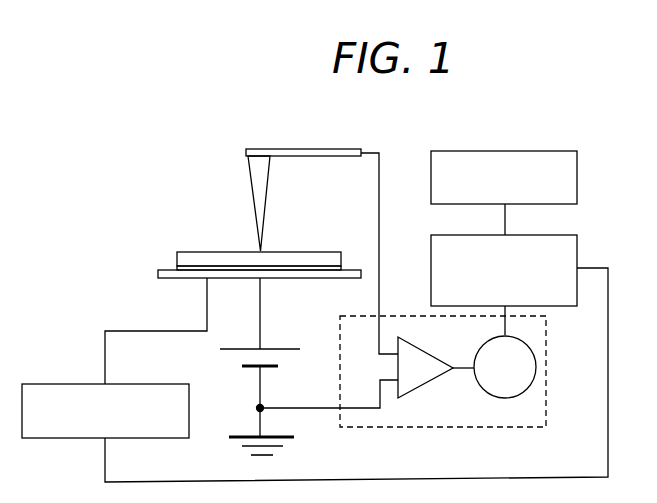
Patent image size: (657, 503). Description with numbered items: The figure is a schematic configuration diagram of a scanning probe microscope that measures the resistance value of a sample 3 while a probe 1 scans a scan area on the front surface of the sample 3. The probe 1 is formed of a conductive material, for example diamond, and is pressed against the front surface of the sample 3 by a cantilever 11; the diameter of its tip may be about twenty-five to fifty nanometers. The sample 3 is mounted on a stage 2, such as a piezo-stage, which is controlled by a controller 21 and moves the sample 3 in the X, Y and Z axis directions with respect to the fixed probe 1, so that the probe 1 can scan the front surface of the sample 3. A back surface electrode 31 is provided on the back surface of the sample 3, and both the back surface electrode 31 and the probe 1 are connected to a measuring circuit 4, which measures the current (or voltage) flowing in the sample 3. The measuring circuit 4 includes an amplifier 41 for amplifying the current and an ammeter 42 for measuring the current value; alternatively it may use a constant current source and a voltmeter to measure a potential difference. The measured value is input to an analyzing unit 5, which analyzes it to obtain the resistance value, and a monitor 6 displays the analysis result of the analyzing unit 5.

The probe 1 is at (249, 193).
The cantilever 11 is at (305, 149).
The stage 2 is at (158, 274).
The controller 21 is at (67, 383).
The sample 3 is at (215, 250).
The back surface electrode 31 is at (177, 268).
The measuring circuit 4 is at (453, 427).
The amplifier 41 is at (422, 387).
The ammeter 42 is at (536, 366).
The analyzing unit 5 is at (577, 248).
The monitor 6 is at (577, 173).